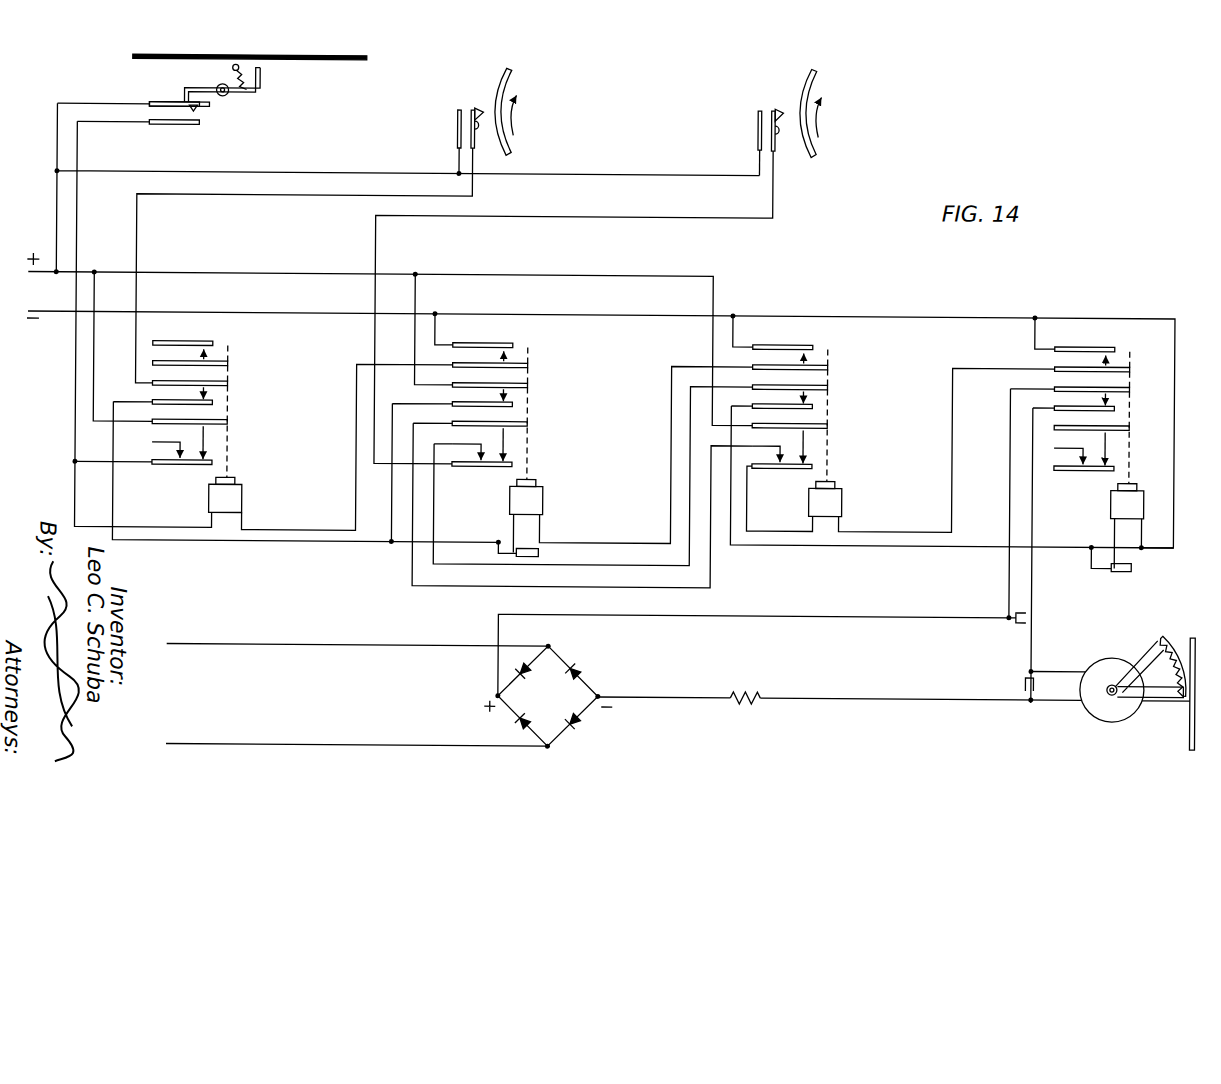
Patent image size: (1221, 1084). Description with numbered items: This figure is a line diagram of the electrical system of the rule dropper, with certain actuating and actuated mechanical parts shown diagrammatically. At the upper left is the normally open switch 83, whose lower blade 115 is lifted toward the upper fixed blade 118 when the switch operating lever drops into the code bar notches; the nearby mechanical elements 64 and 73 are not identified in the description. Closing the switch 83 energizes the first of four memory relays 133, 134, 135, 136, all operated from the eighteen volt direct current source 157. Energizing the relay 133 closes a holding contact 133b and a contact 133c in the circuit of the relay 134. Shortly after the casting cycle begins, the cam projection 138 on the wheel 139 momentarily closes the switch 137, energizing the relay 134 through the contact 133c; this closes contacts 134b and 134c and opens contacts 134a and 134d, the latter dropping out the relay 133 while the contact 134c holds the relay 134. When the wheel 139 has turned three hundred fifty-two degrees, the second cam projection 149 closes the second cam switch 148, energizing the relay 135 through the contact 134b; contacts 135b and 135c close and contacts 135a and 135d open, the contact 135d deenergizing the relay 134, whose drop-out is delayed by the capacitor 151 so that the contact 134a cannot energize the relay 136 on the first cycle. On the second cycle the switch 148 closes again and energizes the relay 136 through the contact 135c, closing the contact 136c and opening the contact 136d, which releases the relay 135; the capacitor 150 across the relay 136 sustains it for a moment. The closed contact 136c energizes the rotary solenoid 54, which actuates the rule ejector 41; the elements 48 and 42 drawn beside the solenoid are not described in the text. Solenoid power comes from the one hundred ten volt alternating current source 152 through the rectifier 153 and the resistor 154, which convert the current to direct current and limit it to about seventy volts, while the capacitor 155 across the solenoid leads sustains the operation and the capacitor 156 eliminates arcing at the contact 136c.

The stop bar 64 is at (330, 49).
The pivoted lever arm 73 is at (262, 96).
The switch 83 is at (200, 113).
The lower blade 115 is at (168, 90).
The upper fixed blade 118 is at (172, 127).
The switch 137 is at (460, 107).
The cam projection 138 is at (479, 108).
The wheel 139 is at (516, 71).
The second cam switch 148 is at (759, 106).
The second cam projection 149 is at (781, 140).
The 18 volt D. C. source 157 is at (48, 286).
The relay 133 is at (286, 331).
The contact 133b is at (216, 459).
The contact 133c is at (217, 400).
The relay 134 is at (571, 457).
The contact 134a is at (476, 469).
The contact 134b is at (512, 451).
The contact 134c is at (529, 395).
The contact 134d is at (518, 357).
The relay 135 is at (952, 442).
The contact 135a is at (774, 470).
The contact 135b is at (816, 459).
The contact 135c is at (816, 402).
The contact 135d is at (818, 358).
The relay 136 is at (1101, 514).
The contact 136c is at (1120, 404).
The contact 136d is at (1140, 348).
The capacitor 150 is at (1136, 577).
The capacitor 151 is at (542, 559).
The 110 volt A. C. source 152 is at (339, 745).
The rectifier 153 is at (591, 679).
The resistor 154 is at (758, 690).
The capacitor 155 is at (1025, 687).
The capacitor 156 is at (1036, 613).
The rotary solenoid 54 is at (1104, 657).
The arm 48 is at (1159, 639).
The toothed sector 42 is at (1193, 633).
The rule ejector 41 is at (1191, 722).